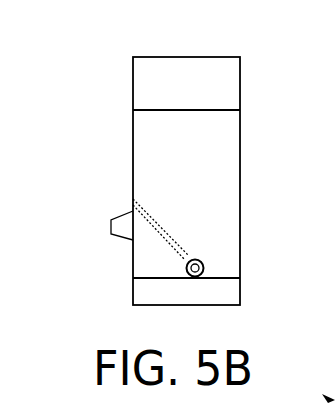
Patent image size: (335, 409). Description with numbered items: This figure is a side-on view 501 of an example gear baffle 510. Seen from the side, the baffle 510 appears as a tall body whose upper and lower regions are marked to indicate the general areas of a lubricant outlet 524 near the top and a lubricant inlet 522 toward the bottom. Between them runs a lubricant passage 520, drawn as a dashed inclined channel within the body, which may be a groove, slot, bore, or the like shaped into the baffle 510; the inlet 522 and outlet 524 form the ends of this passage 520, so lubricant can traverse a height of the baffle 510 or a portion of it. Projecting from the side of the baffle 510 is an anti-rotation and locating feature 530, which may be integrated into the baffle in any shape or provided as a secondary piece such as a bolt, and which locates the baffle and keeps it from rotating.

The side-on view 501 is at (95, 70).
The baffle 510 is at (240, 82).
The lubricant passage 520 is at (163, 226).
The lubricant inlet 522 is at (240, 240).
The lubricant outlet 524 is at (185, 59).
The anti-rotation and locating feature 530 is at (111, 234).